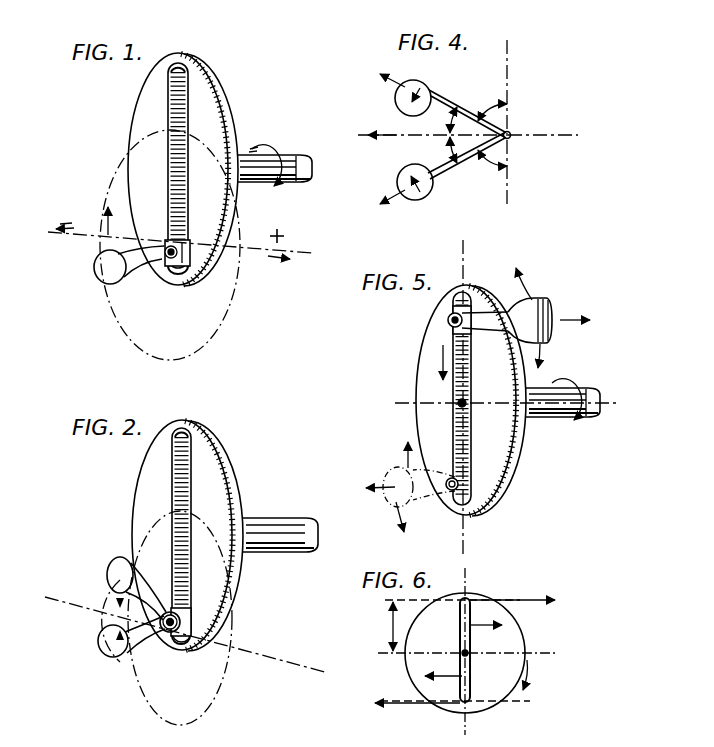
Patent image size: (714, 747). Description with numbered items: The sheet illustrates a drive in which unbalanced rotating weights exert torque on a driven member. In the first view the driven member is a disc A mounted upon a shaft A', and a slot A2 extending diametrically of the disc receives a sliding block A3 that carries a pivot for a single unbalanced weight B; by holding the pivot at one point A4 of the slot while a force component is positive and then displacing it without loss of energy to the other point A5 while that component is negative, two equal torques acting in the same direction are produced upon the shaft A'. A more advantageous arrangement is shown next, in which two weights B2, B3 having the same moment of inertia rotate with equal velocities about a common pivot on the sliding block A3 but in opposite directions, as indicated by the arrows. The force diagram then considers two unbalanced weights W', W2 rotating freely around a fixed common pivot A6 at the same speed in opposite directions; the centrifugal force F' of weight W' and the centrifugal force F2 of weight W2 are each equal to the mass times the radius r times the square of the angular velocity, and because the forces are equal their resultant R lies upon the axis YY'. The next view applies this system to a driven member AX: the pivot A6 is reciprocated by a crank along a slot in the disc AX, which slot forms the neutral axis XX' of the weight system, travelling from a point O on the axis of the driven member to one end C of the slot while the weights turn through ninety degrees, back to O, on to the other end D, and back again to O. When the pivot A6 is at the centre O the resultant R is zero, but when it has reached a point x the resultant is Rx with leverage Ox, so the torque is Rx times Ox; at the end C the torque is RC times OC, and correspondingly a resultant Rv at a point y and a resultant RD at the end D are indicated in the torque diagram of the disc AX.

In FIG. 1, the disc A is at (188, 169).
In FIG. 2, the disc A is at (192, 535).
In FIG. 5, the disc A is at (471, 400).
In FIG. 1, the shaft A' is at (274, 154).
In FIG. 2, the shaft A' is at (280, 517).
In FIG. 5, the shaft A' is at (563, 399).
In FIG. 1, the slot A2 is at (168, 105).
In FIG. 2, the slot A2 is at (172, 482).
In FIG. 1, the sliding block A3 is at (186, 250).
In FIG. 2, the sliding block A3 is at (190, 614).
In FIG. 1, the point of the slot A4 is at (177, 270).
In FIG. 2, the point of the slot A4 is at (181, 642).
In FIG. 1, the point of the slot A5 is at (182, 66).
In FIG. 2, the point of the slot A5 is at (186, 434).
In FIG. 2, the common pivot A6 is at (166, 632).
In FIG. 4, the common pivot A6 is at (480, 134).
In FIG. 5, the common pivot A6 is at (448, 320).
In FIG. 5, the driven member AX is at (500, 456).
In FIG. 6, the driven member AX is at (520, 638).
In FIG. 1, the unbalanced weight B is at (104, 281).
In FIG. 5, the unbalanced weight B is at (393, 470).
In FIG. 2, the weight B2 is at (111, 658).
In FIG. 2, the weight B3 is at (118, 558).
In FIG. 5, the end of the slot C is at (468, 292).
In FIG. 6, the end of the slot C is at (470, 600).
In FIG. 5, the other end of the slot D is at (478, 509).
In FIG. 6, the other end of the slot D is at (470, 708).
In FIG. 5, the point on the axis of the driven member O is at (466, 406).
In FIG. 6, the point on the axis of the driven member O is at (467, 652).
In FIG. 4, the unbalanced weight W' is at (434, 91).
In FIG. 5, the unbalanced weight W' is at (560, 351).
In FIG. 4, the unbalanced weight W2 is at (431, 192).
In FIG. 5, the unbalanced weight W2 is at (528, 300).
In FIG. 4, the centrifugal force F' is at (387, 73).
In FIG. 4, the centrifugal force F2 is at (388, 208).
In FIG. 4, the resultant R is at (382, 124).
In FIG. 5, the resultant R is at (582, 319).
In FIG. 6, the resultant at point C RC is at (520, 590).
In FIG. 6, the resultant at point D RD is at (417, 691).
In FIG. 6, the resultant at point x Rx is at (487, 615).
In FIG. 6, the resultant at point y Rv is at (439, 667).
In FIG. 6, the radius of rotation r is at (389, 626).
In FIG. 6, the point on the slot x is at (446, 625).
In FIG. 6, the point on the slot y is at (479, 673).
In FIG. 1, the axis X is at (170, 238).
In FIG. 2, the axis X is at (184, 620).
In FIG. 4, the axis X is at (518, 207).
In FIG. 5, the axis X is at (471, 394).
In FIG. 6, the axis X is at (472, 649).
In FIG. 1, the axis X' is at (306, 241).
In FIG. 2, the axis X' is at (310, 655).
In FIG. 4, the axis X' is at (518, 121).
In FIG. 5, the axis X' is at (476, 545).
In FIG. 6, the axis X' is at (475, 730).
In FIG. 4, the axis Y is at (460, 133).
In FIG. 6, the axis Y is at (473, 643).
In FIG. 4, the axis Y' is at (586, 125).
In FIG. 6, the axis Y' is at (379, 642).